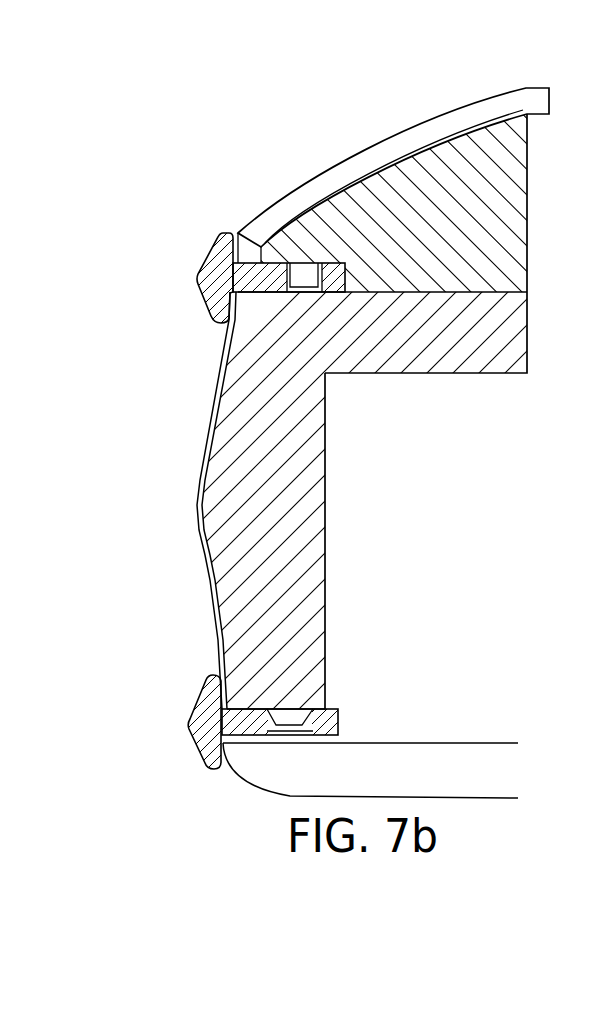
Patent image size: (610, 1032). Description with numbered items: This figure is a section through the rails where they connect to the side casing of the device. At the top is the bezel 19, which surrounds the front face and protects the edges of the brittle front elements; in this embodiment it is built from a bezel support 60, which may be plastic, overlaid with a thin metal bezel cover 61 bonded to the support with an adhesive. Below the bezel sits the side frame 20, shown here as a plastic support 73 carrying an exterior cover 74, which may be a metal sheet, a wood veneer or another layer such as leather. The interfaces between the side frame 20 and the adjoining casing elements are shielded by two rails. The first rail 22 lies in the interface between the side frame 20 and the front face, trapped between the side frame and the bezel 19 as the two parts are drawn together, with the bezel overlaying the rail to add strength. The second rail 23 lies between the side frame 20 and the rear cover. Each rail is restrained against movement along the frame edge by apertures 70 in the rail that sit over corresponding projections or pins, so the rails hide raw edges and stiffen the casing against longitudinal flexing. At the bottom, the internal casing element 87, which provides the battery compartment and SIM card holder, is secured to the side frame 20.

The bezel 19 is at (393, 139).
The bezel cover 61 is at (417, 140).
The bezel support 60 is at (375, 197).
The apertures 70 is at (245, 232).
The first rail 22 is at (186, 272).
The exterior cover 74 is at (199, 473).
The side frame 20 is at (305, 420).
The plastic support 73 is at (323, 590).
The second rail 23 is at (181, 748).
The internal casing element 87 is at (449, 757).